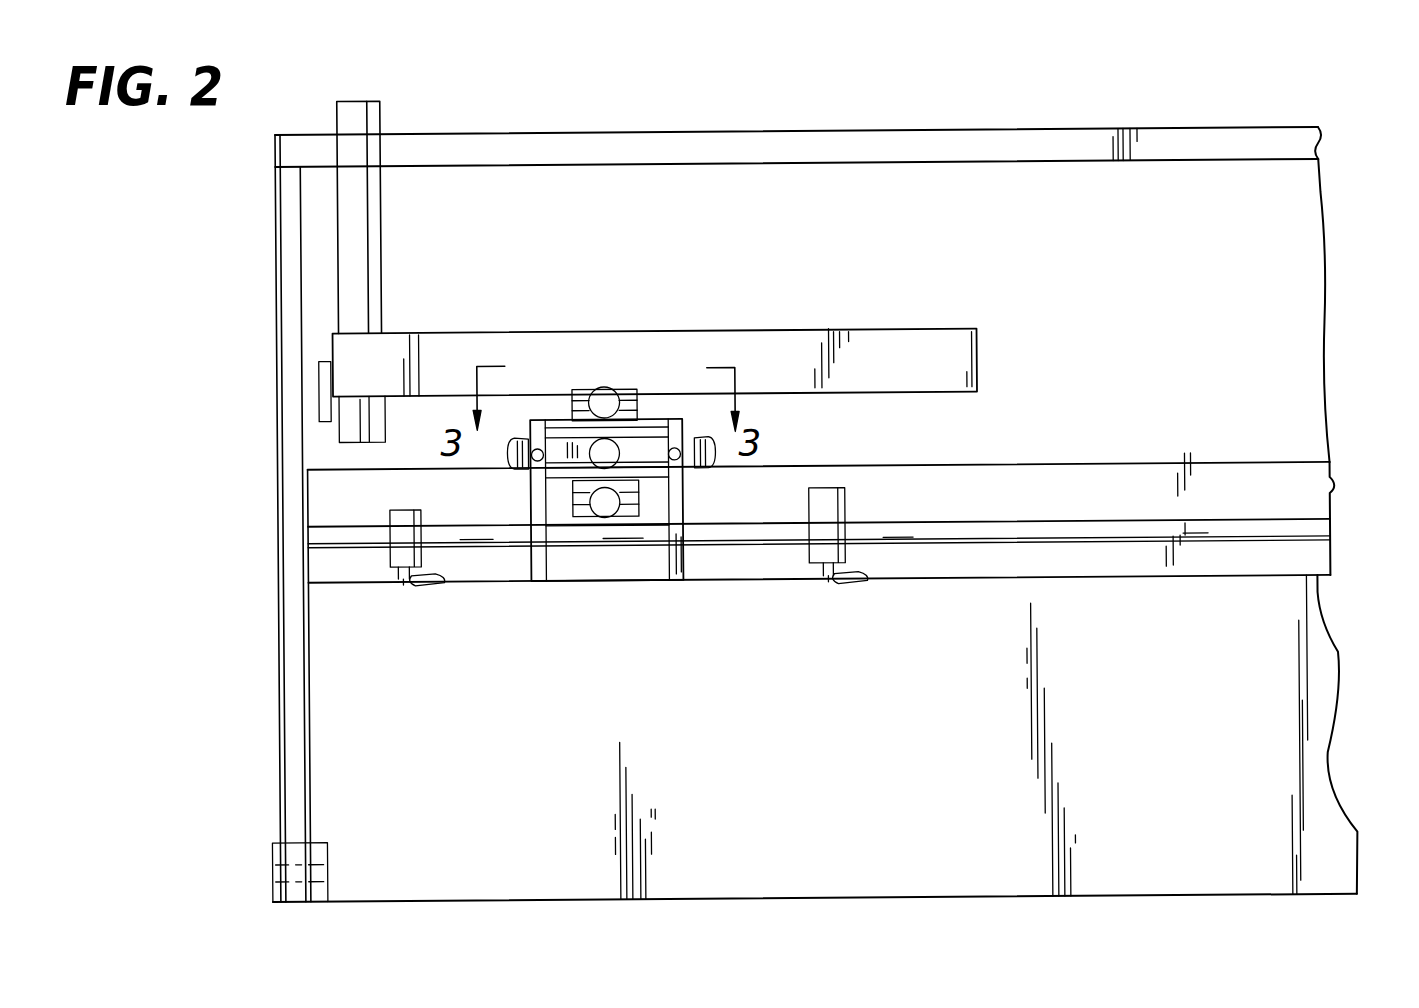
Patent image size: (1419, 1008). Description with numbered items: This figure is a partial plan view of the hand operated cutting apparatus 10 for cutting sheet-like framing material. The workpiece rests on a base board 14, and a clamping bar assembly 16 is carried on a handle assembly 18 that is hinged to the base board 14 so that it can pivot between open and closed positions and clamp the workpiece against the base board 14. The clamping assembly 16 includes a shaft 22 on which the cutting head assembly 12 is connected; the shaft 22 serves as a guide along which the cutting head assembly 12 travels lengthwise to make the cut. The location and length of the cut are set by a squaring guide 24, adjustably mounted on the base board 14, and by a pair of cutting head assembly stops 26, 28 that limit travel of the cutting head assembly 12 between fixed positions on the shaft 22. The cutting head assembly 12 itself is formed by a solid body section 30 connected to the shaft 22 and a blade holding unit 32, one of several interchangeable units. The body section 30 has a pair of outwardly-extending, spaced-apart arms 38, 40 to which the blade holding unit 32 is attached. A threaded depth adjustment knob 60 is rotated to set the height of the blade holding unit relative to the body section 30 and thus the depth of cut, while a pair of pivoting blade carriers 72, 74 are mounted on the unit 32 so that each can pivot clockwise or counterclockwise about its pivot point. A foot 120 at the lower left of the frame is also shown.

The cutting apparatus 10 is at (1297, 193).
The cutting head assembly 12 is at (650, 538).
The base board 14 is at (1219, 291).
The clamping bar assembly 16 is at (1307, 506).
The handle assembly 18 is at (1233, 135).
The shaft 22 is at (1222, 534).
The squaring guide 24 is at (955, 338).
The cutting head assembly stop 26 is at (395, 559).
The cutting head assembly stop 28 is at (832, 509).
The solid body section 30 is at (649, 581).
The blade holding unit 32 is at (657, 431).
The arm 38 is at (534, 482).
The arm 40 is at (673, 496).
The depth adjustment knob 60 is at (588, 450).
The pivoting blade carrier 72 is at (605, 393).
The pivoting blade carrier 74 is at (601, 516).
The foot 120 is at (322, 874).